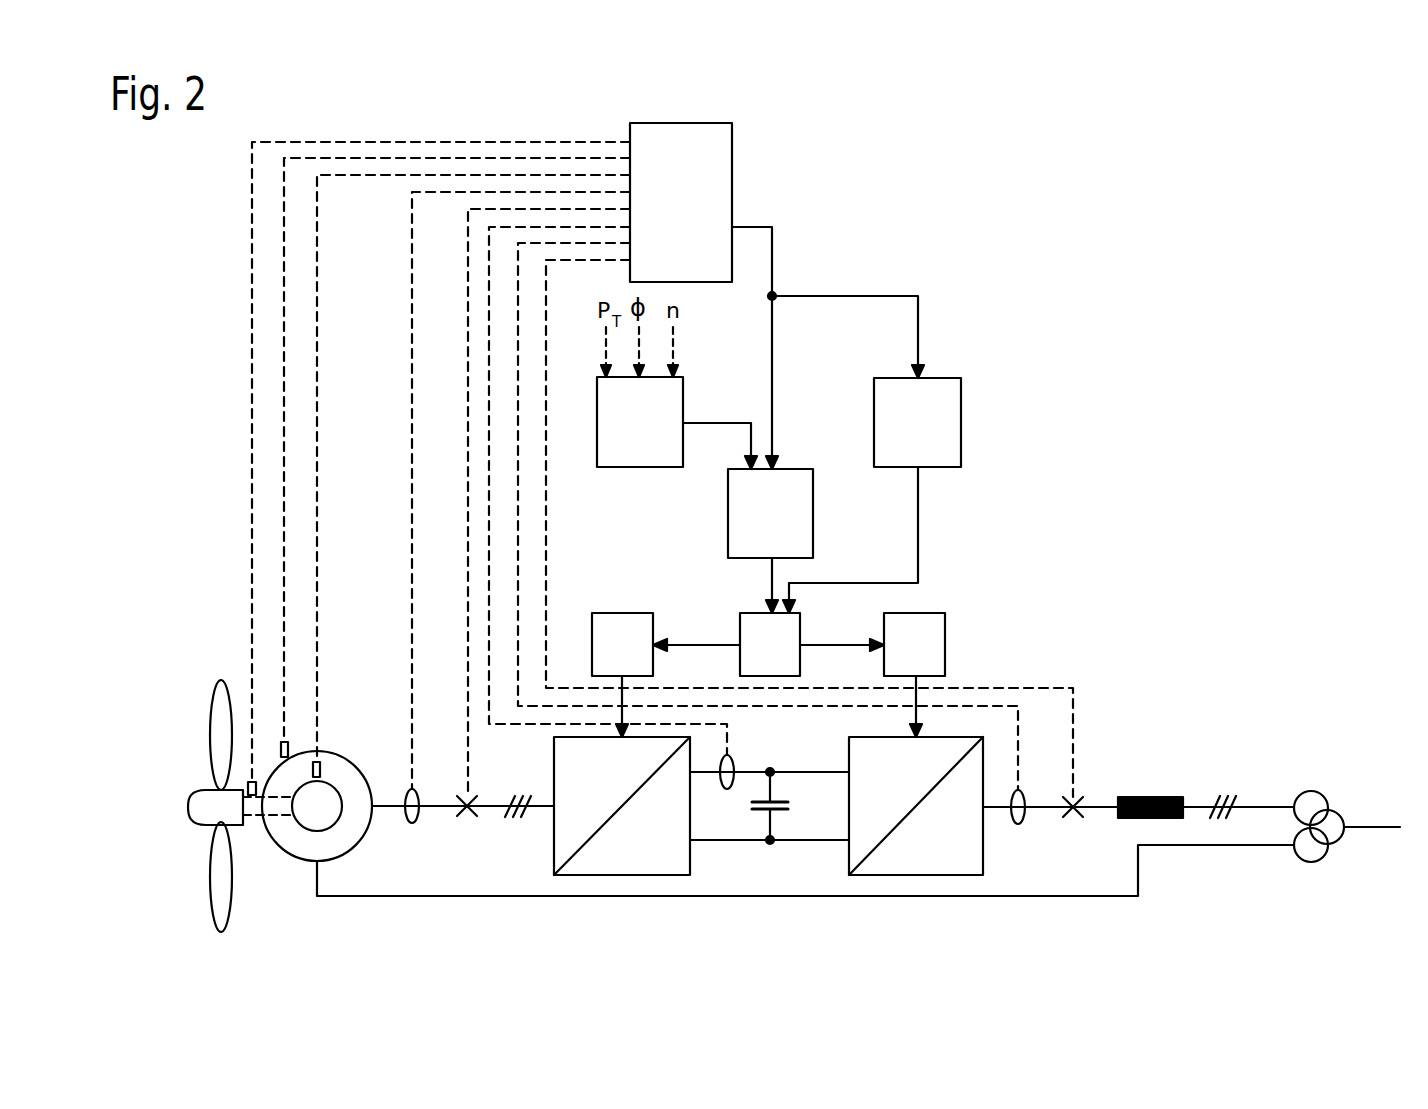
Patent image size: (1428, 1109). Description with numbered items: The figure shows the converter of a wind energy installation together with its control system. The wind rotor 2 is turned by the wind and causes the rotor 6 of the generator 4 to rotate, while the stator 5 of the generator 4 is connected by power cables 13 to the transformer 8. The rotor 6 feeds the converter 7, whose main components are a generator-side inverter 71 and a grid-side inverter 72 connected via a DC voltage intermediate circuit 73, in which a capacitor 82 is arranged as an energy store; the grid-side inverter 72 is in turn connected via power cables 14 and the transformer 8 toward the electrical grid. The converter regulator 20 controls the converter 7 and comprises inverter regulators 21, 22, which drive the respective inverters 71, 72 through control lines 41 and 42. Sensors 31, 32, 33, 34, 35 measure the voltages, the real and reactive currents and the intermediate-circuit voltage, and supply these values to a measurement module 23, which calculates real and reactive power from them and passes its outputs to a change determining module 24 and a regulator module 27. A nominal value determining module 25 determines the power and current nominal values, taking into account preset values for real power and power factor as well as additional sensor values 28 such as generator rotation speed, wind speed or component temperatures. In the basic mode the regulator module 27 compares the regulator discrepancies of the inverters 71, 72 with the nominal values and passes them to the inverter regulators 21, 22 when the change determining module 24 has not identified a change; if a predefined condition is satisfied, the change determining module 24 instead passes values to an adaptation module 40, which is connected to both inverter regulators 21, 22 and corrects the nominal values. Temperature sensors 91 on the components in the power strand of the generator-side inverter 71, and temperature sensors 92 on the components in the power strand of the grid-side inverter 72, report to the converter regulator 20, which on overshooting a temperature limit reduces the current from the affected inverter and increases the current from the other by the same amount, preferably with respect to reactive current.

The wind rotor 2 is at (200, 812).
The generator 4 is at (281, 875).
The stator 5 is at (352, 850).
The rotor 6 is at (335, 785).
The converter 7 is at (880, 809).
The transformer 8 is at (1330, 812).
The power cables 13 is at (912, 896).
The power cables 14 is at (1263, 807).
The converter regulator 20 is at (1085, 222).
The inverter regulator 21 is at (622, 613).
The inverter regulator 22 is at (920, 613).
The measurement module 23 is at (732, 168).
The change determining module 24 is at (961, 425).
The nominal value determining module 25 is at (683, 400).
The regulator module 27 is at (813, 517).
The additional sensor values 28 is at (247, 788).
The sensor 31 is at (418, 792).
The sensor 32 is at (472, 798).
The sensor 33 is at (1023, 792).
The sensor 34 is at (1078, 800).
The sensor 35 is at (733, 762).
The adaptation module 40 is at (740, 630).
The control line 41 is at (622, 699).
The control line 42 is at (916, 700).
The generator-side inverter 71 is at (690, 858).
The grid-side inverter 72 is at (983, 858).
The DC voltage intermediate circuit 73 is at (770, 840).
The capacitor 82 is at (788, 800).
The temperature sensors 91 is at (288, 745).
The temperature sensors 92 is at (320, 765).